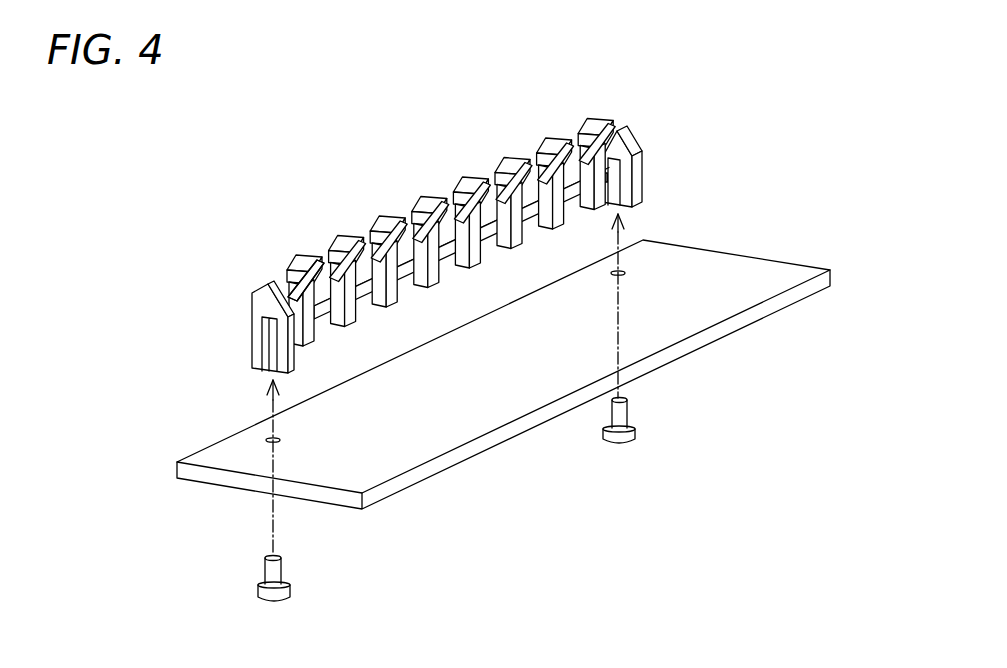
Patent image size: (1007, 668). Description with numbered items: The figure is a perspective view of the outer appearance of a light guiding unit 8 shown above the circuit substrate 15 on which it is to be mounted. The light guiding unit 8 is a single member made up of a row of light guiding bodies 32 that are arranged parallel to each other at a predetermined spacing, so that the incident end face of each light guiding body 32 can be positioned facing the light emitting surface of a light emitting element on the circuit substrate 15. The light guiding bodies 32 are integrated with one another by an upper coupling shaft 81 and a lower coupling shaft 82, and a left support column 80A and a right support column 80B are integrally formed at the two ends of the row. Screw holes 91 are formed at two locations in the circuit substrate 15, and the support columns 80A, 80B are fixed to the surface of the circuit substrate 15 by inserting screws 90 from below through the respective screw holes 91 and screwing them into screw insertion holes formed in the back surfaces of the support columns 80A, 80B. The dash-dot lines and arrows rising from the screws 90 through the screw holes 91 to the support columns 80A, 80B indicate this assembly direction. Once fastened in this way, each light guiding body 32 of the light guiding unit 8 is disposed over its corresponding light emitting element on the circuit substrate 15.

The light guiding unit 8 is at (338, 144).
The circuit substrate 15 is at (481, 452).
The light guiding body 32 is at (289, 273).
The left support column 80A is at (257, 332).
The right support column 80B is at (642, 178).
The upper coupling shaft 81 is at (283, 284).
The lower coupling shaft 82 is at (322, 330).
The screw 90 is at (282, 577).
The screw hole 91 is at (284, 439).